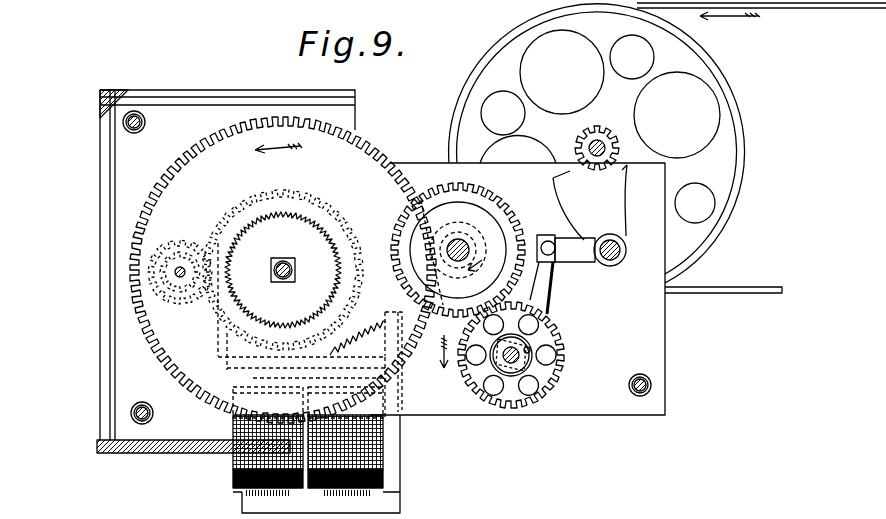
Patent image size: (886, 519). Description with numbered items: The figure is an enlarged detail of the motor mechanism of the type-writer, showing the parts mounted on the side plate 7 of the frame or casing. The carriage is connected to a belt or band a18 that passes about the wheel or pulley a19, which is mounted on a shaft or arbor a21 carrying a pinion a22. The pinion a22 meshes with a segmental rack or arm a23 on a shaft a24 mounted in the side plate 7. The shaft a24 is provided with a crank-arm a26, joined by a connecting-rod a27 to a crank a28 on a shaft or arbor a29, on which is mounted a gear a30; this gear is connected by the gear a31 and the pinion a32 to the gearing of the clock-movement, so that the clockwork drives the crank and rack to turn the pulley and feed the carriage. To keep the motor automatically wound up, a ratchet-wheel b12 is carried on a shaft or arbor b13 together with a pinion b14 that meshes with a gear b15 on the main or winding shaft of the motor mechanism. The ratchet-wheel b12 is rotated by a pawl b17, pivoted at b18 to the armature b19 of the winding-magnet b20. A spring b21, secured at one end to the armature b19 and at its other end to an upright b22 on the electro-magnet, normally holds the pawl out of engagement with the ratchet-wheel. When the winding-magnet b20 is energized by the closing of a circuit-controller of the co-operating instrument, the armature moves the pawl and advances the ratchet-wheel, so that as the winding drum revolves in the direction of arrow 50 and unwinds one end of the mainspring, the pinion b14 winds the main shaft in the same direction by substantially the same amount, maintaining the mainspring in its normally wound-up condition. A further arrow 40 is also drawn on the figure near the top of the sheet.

The side plate 7 is at (657, 364).
The shaft 40 is at (761, 20).
The arrow 50 is at (278, 155).
The belt or band a18 is at (737, 287).
The wheel or pulley a19 is at (518, 35).
The shaft or arbor a21 is at (622, 141).
The pinion a22 is at (603, 137).
The segmental rack or arm a23 is at (606, 216).
The shaft a24 is at (612, 266).
The crank-arm a26 is at (580, 264).
The connecting-rod a27 is at (557, 305).
The crank a28 is at (548, 368).
The shaft or arbor a29 is at (531, 349).
The gear a30 is at (516, 412).
The gear a31 is at (520, 232).
The pinion a32 is at (482, 249).
The ratchet-wheel b12 is at (181, 240).
The shaft or arbor b13 is at (178, 276).
The pinion b14 is at (165, 265).
The gear b15 is at (252, 191).
The pawl b17 is at (220, 331).
The pivot b18 is at (218, 357).
The armature b19 is at (286, 360).
The winding-magnet b20 is at (388, 440).
The spring b21 is at (385, 318).
The upright b22 is at (388, 395).